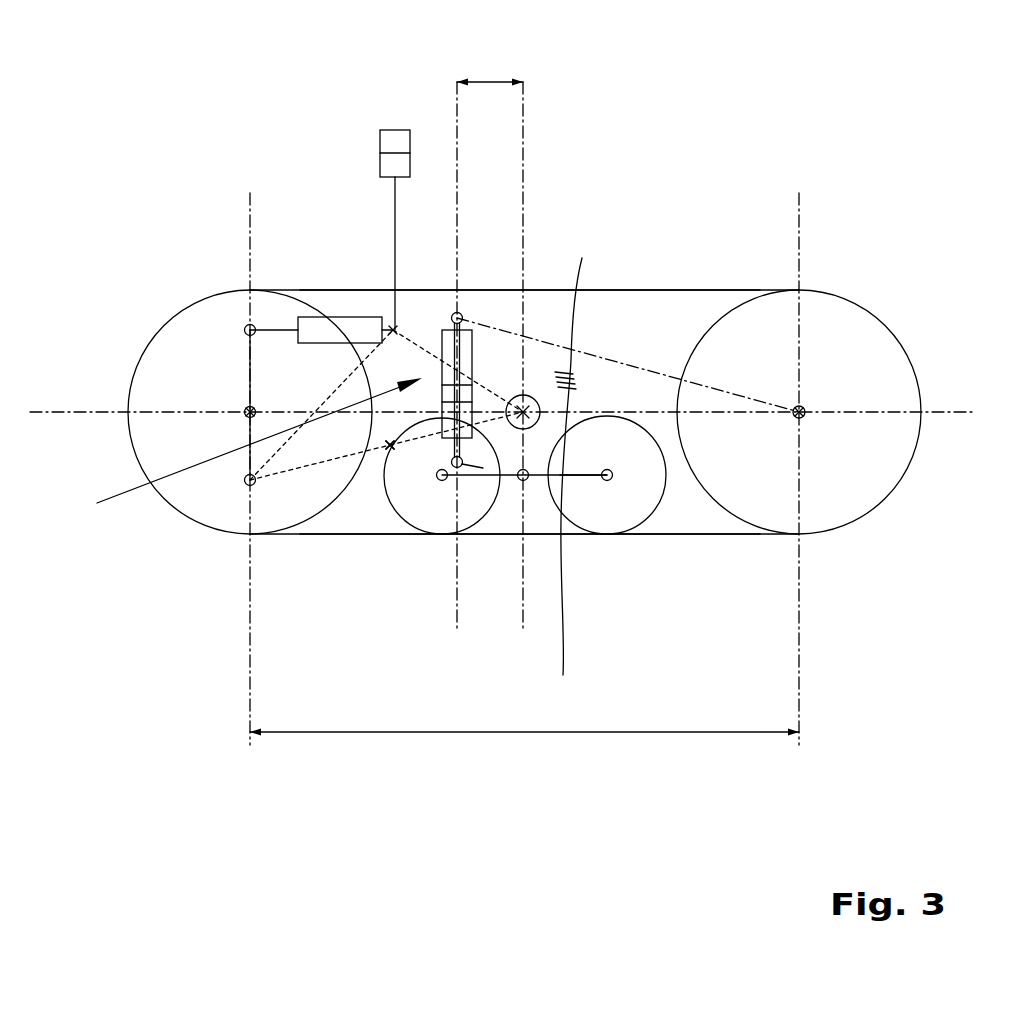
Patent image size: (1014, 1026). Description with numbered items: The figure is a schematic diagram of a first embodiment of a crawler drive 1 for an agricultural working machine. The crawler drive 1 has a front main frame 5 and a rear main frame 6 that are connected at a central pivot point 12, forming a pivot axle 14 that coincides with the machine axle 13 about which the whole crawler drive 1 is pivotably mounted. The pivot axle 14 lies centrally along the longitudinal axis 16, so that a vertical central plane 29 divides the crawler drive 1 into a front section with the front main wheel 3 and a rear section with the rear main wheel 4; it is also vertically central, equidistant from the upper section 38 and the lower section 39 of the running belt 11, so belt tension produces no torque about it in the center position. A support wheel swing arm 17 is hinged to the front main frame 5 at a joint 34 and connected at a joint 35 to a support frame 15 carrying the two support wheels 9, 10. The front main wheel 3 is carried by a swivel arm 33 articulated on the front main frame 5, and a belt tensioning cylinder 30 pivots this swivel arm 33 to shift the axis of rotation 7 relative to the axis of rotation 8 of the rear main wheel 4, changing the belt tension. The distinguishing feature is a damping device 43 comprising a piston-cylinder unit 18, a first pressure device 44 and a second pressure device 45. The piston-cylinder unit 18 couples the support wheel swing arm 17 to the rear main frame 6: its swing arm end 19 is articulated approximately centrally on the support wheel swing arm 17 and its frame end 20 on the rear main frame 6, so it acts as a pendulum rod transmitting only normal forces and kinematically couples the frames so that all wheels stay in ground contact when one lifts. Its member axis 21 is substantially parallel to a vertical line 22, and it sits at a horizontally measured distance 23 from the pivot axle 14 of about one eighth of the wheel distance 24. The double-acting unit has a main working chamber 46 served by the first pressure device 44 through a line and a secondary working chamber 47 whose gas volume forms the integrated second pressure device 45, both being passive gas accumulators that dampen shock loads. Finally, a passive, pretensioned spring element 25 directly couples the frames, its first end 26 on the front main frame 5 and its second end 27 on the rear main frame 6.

The crawler drive 1 is at (230, 150).
The front main wheel 3 is at (192, 335).
The rear main wheel 4 is at (863, 337).
The front main frame 5 is at (253, 531).
The rear main frame 6 is at (668, 368).
The axis of rotation 7 is at (248, 414).
The axis of rotation 8 is at (808, 418).
The support wheel 9 is at (385, 455).
The support wheel 10 is at (632, 495).
The running belt 11 is at (530, 247).
The pivot point 12 is at (619, 292).
The machine axle 13 is at (619, 292).
The pivot axle 14 is at (527, 398).
The support frame 15 is at (580, 477).
The longitudinal axis 16 is at (882, 410).
The support wheel swing arm 17 is at (440, 418).
The piston-cylinder unit 18 is at (473, 334).
The swing arm end 19 is at (452, 460).
The frame end 20 is at (452, 325).
The member axis 21 is at (453, 622).
The vertical line 22 is at (585, 356).
The horizontally measured distance 23 is at (493, 82).
The wheel distance 24 is at (512, 734).
The spring element 25 is at (575, 382).
The first end 26 is at (573, 469).
The second end 27 is at (573, 469).
The central plane 29 is at (527, 163).
The belt tensioning cylinder 30 is at (357, 335).
The swivel arm 33 is at (247, 392).
The joint 34 is at (373, 398).
The joint 35 is at (510, 478).
The upper section 38 is at (633, 290).
The lower section 39 is at (737, 536).
The damping device 43 is at (242, 450).
The first pressure device 44 is at (372, 125).
The second pressure device 45 is at (320, 494).
The main working chamber 46 is at (472, 303).
The secondary working chamber 47 is at (375, 432).